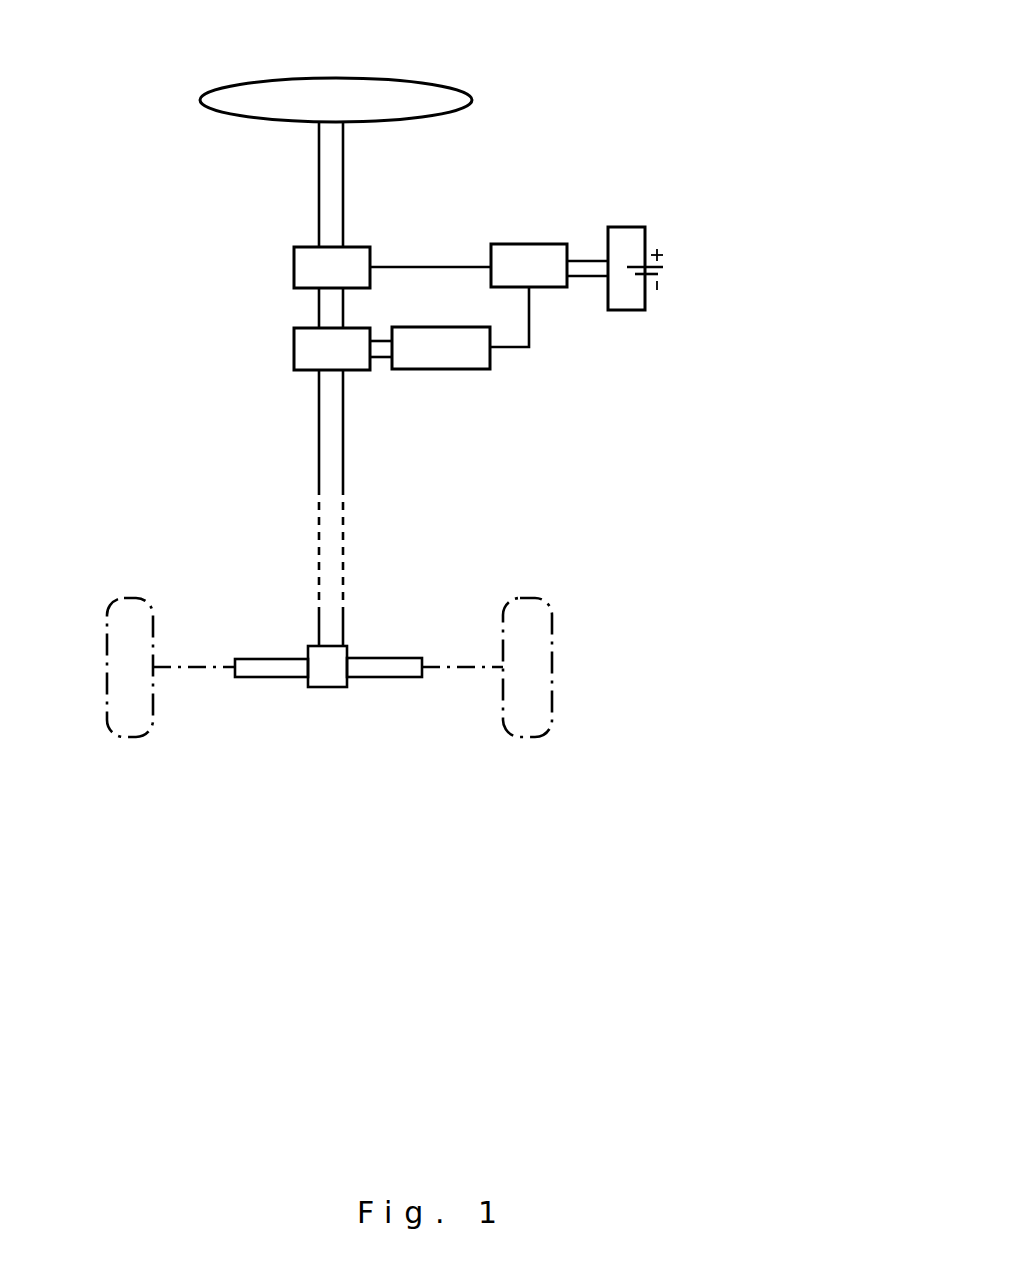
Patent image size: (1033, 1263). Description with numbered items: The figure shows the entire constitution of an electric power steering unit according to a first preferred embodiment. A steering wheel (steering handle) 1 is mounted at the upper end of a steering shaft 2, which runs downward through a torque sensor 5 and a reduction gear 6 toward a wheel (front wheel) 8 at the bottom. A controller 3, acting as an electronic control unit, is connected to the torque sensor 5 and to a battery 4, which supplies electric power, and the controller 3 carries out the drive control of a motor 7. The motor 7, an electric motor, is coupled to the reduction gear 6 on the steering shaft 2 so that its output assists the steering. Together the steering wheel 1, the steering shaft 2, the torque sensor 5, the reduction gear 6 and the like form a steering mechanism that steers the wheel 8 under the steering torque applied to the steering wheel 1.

The steering wheel 1 is at (410, 78).
The steering shaft 2 is at (344, 145).
The controller 3 is at (528, 244).
The battery 4 is at (663, 268).
The torque sensor 5 is at (294, 262).
The reduction gear 6 is at (294, 355).
The motor 7 is at (435, 369).
The wheel 8 is at (517, 598).